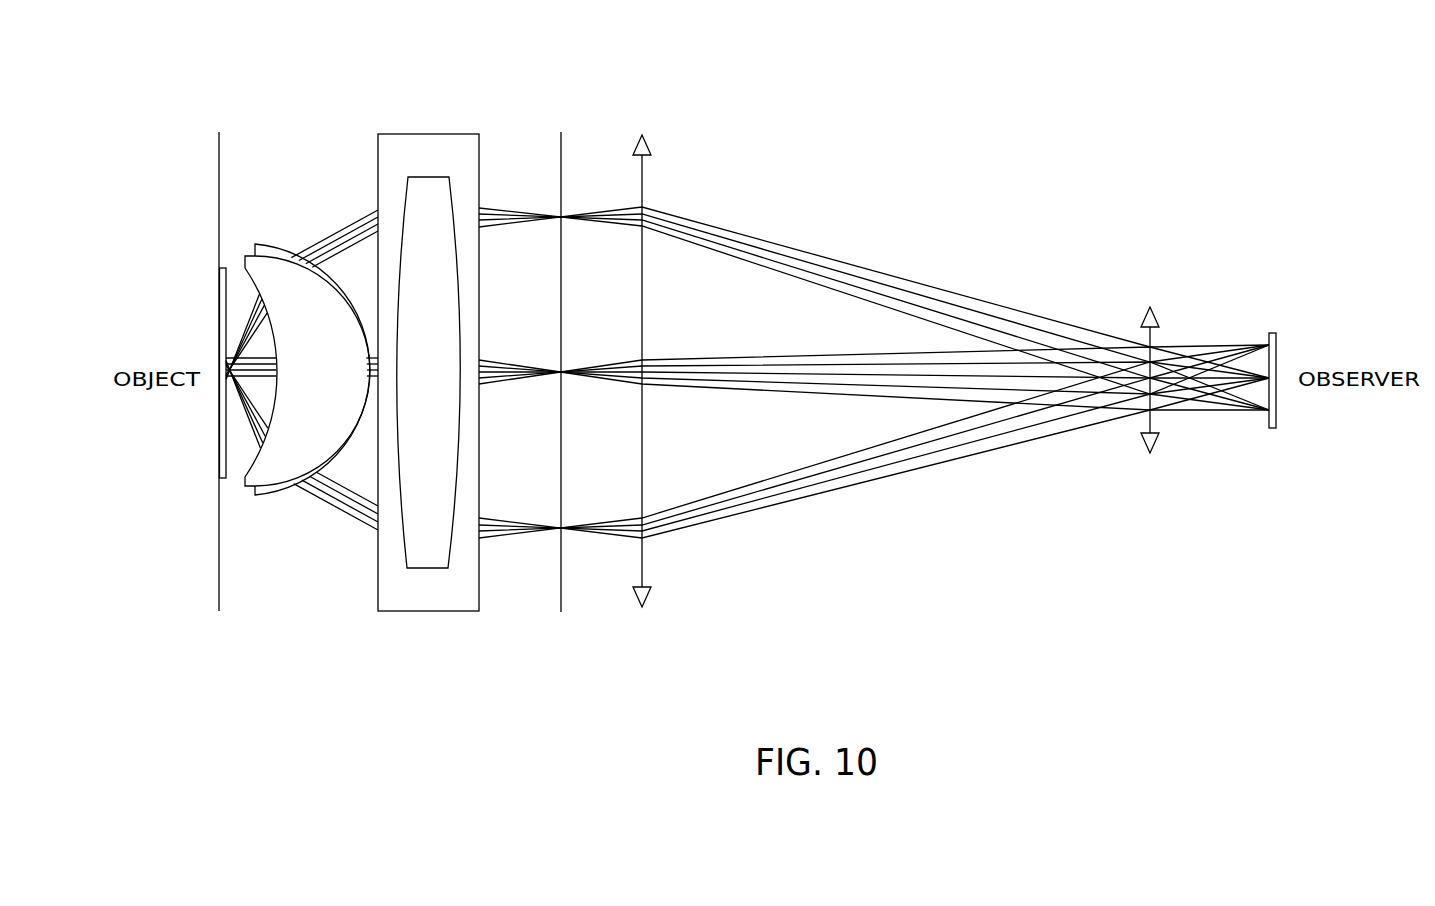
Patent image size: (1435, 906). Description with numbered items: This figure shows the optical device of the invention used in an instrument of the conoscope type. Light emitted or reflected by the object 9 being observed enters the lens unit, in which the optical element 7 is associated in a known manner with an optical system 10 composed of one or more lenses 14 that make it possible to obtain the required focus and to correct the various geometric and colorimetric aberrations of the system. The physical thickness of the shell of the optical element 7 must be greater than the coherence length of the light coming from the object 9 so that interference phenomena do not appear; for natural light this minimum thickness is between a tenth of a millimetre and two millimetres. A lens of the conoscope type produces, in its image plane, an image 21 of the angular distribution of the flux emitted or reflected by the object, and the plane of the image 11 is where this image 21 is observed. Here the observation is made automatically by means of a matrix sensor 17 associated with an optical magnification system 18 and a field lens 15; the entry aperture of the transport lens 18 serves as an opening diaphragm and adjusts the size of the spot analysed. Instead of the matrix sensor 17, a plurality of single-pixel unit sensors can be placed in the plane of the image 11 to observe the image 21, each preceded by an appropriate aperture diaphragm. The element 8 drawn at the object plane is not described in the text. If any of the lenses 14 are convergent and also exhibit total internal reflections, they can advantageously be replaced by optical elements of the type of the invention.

The optical element 7 is at (276, 272).
The object 8 is at (220, 298).
The object 9 is at (218, 215).
The optical system 10 is at (455, 145).
The image 11 is at (640, 392).
The image 21 is at (561, 598).
The lenses 14 is at (428, 550).
The field lens 15 is at (645, 278).
The matrix sensor 17 is at (1273, 428).
The optical magnification system 18 is at (1153, 335).